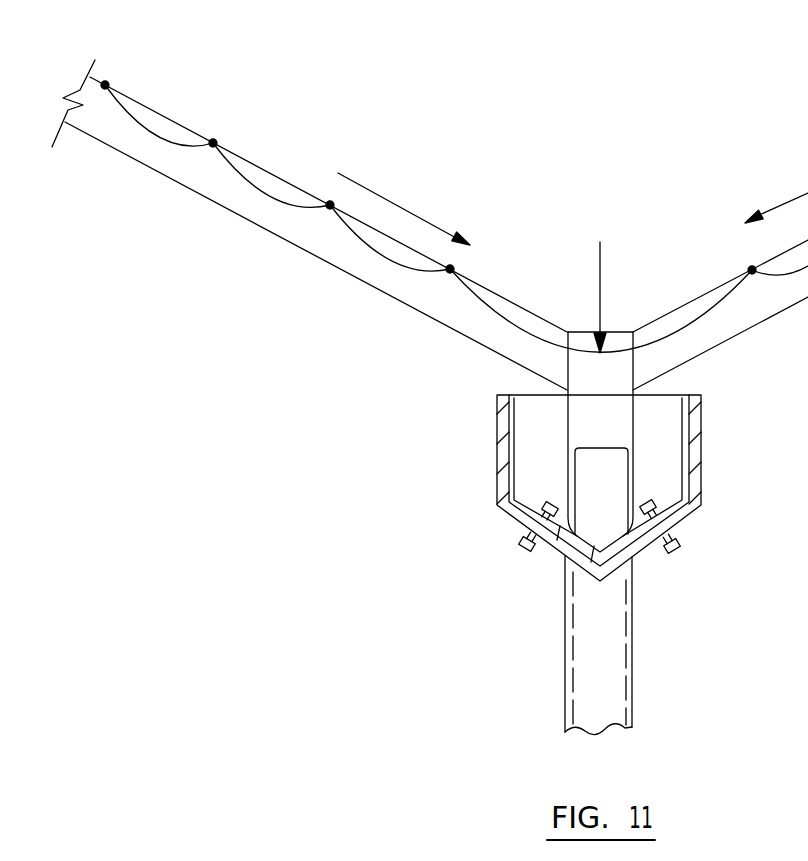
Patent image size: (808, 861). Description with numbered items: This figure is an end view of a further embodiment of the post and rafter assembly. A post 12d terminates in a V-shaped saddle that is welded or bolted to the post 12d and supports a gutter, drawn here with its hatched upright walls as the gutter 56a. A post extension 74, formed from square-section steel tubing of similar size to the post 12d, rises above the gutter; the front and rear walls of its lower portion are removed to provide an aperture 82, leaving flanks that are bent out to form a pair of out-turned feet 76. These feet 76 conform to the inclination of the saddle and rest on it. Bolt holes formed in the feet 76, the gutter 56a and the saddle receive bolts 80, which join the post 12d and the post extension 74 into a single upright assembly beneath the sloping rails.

The post extension 74 is at (546, 409).
The aperture 82 is at (597, 475).
The out-turned feet 76 is at (525, 503).
The bracket 56a is at (693, 457).
The bolts 80 is at (527, 550).
The post 12d is at (608, 722).